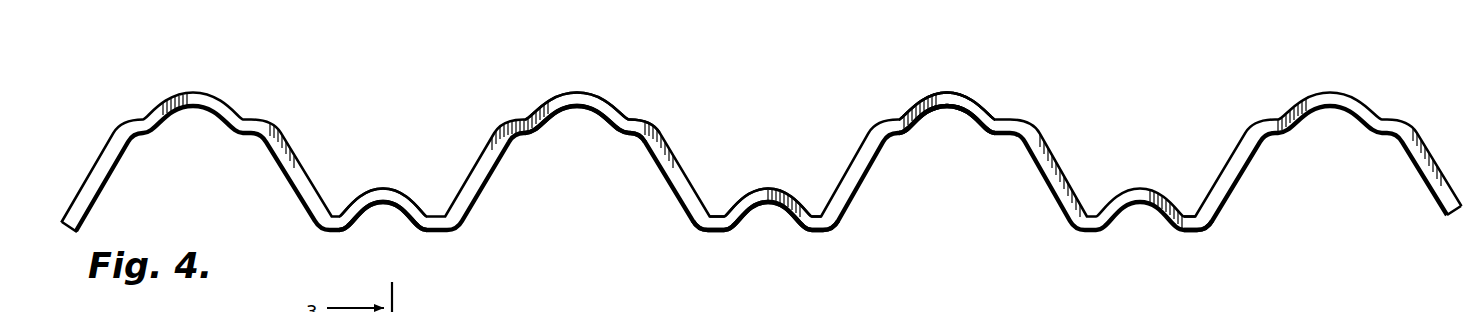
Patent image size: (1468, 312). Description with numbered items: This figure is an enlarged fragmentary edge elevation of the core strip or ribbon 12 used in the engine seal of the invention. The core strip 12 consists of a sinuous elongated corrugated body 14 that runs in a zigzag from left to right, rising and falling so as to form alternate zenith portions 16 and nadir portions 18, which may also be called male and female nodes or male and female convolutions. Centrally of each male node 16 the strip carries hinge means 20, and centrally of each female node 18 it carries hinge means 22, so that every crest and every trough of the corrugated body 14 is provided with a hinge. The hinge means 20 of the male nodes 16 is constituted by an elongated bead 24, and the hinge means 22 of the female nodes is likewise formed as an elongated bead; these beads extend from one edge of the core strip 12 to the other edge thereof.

The core strip or ribbon 12 is at (1099, 234).
The sinuous elongated corrugated body 14 is at (829, 234).
The zenith portion 16 is at (633, 118).
The nadir portion 18 is at (713, 214).
The hinge means 20 is at (592, 92).
The hinge means 22 is at (397, 189).
The elongated bead 24 is at (956, 92).